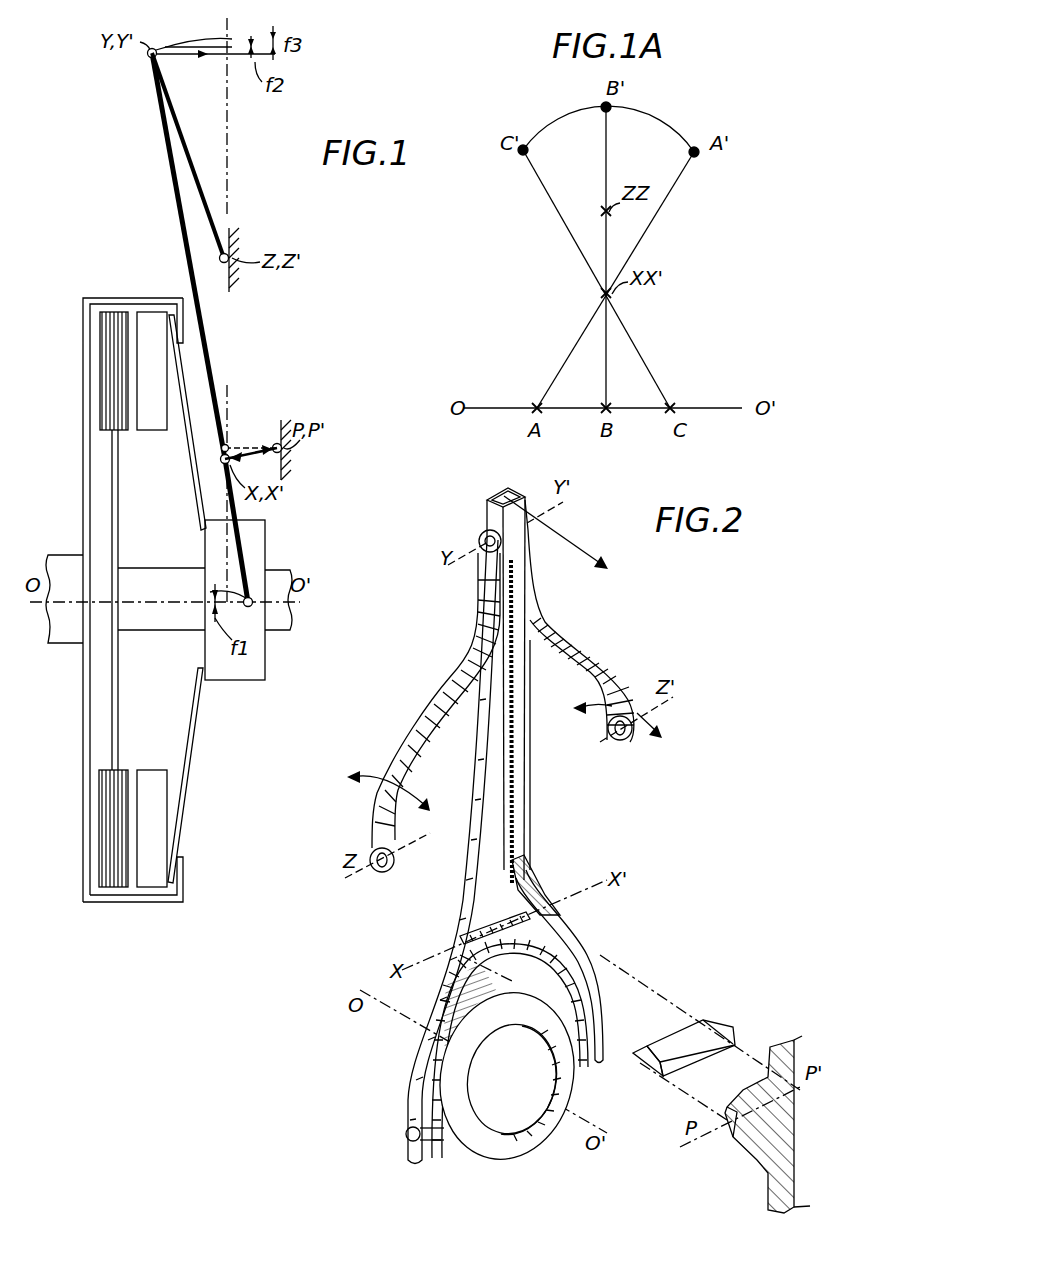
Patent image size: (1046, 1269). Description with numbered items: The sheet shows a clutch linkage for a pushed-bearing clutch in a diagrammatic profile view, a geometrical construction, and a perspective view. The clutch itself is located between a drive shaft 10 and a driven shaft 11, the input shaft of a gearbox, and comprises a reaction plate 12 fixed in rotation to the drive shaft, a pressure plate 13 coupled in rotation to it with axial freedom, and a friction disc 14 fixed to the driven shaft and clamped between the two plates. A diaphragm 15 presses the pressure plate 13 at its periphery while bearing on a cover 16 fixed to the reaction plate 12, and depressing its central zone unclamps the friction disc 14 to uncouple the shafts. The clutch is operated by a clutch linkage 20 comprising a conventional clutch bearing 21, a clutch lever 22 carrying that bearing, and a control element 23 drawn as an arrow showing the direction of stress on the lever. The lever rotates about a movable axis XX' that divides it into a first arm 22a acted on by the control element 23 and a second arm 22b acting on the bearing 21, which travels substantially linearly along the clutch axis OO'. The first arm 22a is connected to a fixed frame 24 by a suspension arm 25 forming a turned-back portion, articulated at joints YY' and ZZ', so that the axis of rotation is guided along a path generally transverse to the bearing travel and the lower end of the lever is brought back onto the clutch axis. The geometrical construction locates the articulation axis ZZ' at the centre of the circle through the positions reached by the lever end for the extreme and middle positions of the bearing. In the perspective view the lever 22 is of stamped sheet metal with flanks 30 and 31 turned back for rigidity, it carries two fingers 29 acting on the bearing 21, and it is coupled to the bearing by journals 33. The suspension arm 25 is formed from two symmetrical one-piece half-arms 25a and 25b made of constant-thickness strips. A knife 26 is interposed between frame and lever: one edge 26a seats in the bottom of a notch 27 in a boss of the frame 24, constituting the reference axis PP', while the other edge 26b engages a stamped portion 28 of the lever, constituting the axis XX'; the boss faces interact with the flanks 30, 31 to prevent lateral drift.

In FIG. 1, the drive shaft 10 is at (62, 558).
In FIG. 1, the driven shaft 11 is at (273, 575).
In FIG. 1, the reaction plate 12 is at (82, 685).
In FIG. 1, the pressure plate 13 is at (160, 772).
In FIG. 1, the friction disc 14 is at (120, 772).
In FIG. 1, the diaphragm 15 is at (192, 735).
In FIG. 1, the cover 16 is at (140, 905).
In FIG. 1, the clutch linkage 20 is at (150, 165).
In FIG. 1, the clutch bearing 21 is at (245, 683).
In FIG. 2, the clutch bearing 21 is at (521, 1150).
In FIG. 1, the clutch lever 22 is at (212, 342).
In FIG. 2, the clutch lever 22 is at (568, 860).
In FIG. 1, the first arm 22a is at (172, 213).
In FIG. 2, the first arm 22a is at (533, 738).
In FIG. 1, the second arm 22b is at (237, 548).
In FIG. 2, the second arm 22b is at (592, 940).
In FIG. 1, the control element 23 is at (166, 46).
In FIG. 2, the control element 23 is at (574, 544).
In FIG. 1, the fixed frame 24 is at (232, 237).
In FIG. 2, the fixed frame 24 is at (755, 1124).
In FIG. 1, the suspension arm 25 is at (203, 165).
In FIG. 2, the first half-arm 25a is at (424, 726).
In FIG. 2, the second half-arm 25b is at (597, 668).
In FIG. 1, the knife 26 is at (240, 447).
In FIG. 2, the knife 26 is at (728, 1024).
In FIG. 2, the knife edge 26a is at (728, 1053).
In FIG. 2, the knife edge 26b is at (668, 1046).
In FIG. 2, the notch 27 is at (726, 1118).
In FIG. 2, the stamped portion 28 is at (485, 930).
In FIG. 2, the fingers 29 is at (445, 1152).
In FIG. 2, the flank 30 is at (462, 890).
In FIG. 2, the flank 31 is at (536, 865).
In FIG. 2, the journal 33 is at (407, 1137).